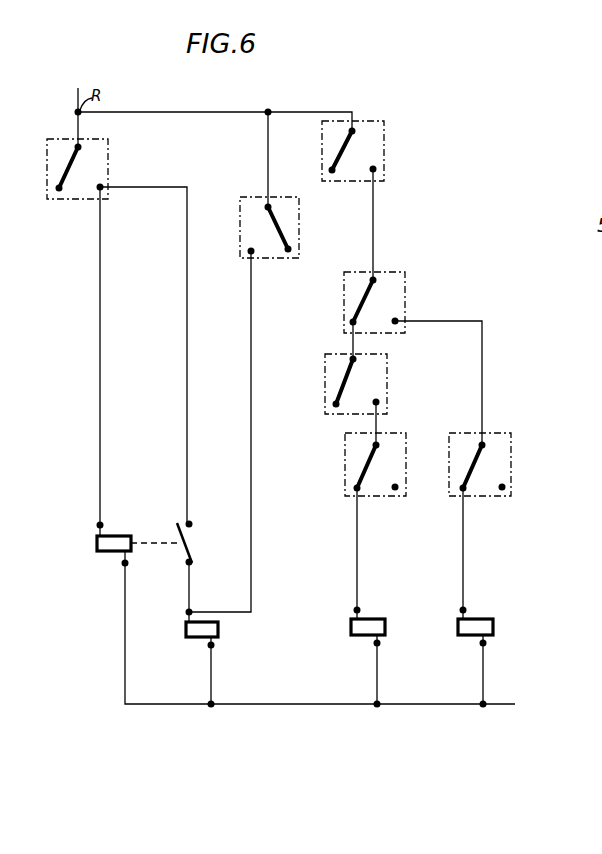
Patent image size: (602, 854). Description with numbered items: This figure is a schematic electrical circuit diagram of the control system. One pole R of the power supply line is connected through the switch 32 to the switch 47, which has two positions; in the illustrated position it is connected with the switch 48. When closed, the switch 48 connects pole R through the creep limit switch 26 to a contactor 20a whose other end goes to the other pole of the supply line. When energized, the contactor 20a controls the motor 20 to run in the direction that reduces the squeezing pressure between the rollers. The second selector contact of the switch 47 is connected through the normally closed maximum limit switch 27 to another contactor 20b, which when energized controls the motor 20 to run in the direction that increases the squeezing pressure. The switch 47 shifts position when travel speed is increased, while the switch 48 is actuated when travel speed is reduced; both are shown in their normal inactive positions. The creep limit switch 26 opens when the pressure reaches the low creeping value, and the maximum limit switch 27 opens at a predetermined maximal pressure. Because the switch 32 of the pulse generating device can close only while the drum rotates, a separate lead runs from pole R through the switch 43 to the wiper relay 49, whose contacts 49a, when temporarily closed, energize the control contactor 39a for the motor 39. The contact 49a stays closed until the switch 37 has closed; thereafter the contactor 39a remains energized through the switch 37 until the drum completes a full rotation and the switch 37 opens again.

The switch 43 is at (96, 160).
The switch 37 is at (284, 232).
The switch 32 is at (374, 147).
The switch 47 is at (392, 295).
The switch 48 is at (375, 389).
The creep limit switch 26 is at (392, 467).
The maximum limit switch 27 is at (505, 459).
The wiper relay 49 is at (116, 536).
The contact of wiper relay 49a is at (182, 537).
The motor 39 is at (252, 662).
The control contactor 39a is at (208, 632).
The motor 20 is at (468, 643).
The contactor 20a is at (373, 628).
The contactor 20b is at (480, 628).